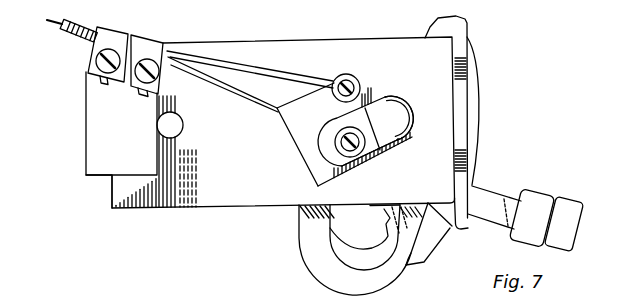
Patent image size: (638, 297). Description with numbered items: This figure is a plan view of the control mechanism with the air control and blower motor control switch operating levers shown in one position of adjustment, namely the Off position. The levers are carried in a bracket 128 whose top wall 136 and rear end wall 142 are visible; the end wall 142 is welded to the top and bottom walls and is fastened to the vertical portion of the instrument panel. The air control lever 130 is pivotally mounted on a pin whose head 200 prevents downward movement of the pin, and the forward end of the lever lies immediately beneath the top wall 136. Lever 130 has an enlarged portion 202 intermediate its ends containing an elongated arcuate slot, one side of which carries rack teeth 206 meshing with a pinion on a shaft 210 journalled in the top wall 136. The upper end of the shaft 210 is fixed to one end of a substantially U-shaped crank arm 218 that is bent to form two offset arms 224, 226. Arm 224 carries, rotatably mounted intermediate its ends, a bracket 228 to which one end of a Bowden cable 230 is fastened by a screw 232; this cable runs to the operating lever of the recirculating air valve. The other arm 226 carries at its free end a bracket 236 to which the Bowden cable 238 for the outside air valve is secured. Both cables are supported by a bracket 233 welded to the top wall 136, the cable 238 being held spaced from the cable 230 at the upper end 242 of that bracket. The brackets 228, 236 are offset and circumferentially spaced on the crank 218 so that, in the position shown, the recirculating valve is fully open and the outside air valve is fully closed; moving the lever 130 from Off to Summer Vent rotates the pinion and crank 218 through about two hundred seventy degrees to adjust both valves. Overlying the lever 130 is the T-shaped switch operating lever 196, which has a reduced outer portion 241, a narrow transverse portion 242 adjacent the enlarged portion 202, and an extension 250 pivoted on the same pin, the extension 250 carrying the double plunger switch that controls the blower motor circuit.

The bracket 128 is at (110, 190).
The control lever 130 is at (573, 212).
The top wall 136 is at (232, 204).
The end wall 142 is at (455, 34).
The switch operating lever 196 is at (533, 190).
The head 200 is at (168, 120).
The enlarged portion 202 is at (392, 275).
The rack teeth 206 is at (387, 242).
The shaft 210 is at (392, 112).
The crank arm 218 is at (284, 145).
The arm 224 is at (333, 130).
The arm 226 is at (323, 163).
The bracket 228 is at (380, 156).
The Bowden cable 230 is at (225, 88).
The screw 232 is at (365, 108).
The bracket 233 is at (88, 105).
The bracket 236 is at (347, 74).
The Bowden cable 238 is at (228, 62).
The reduced outer portion 241 is at (498, 207).
The upper end / transverse portion 242 is at (95, 48).
The extension 250 is at (387, 205).